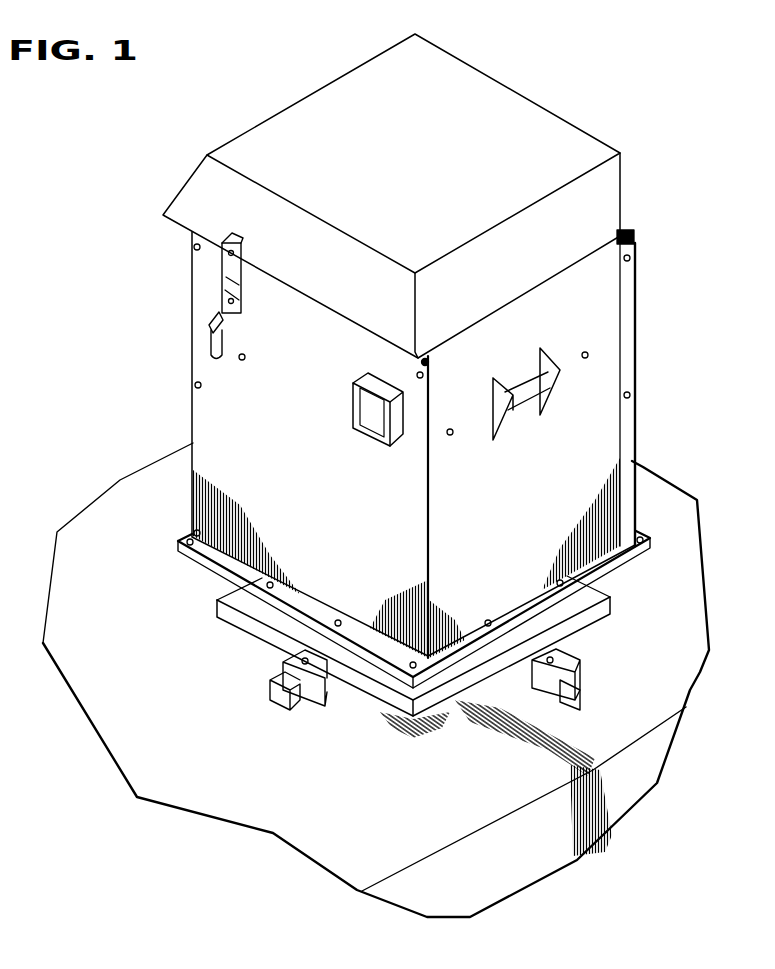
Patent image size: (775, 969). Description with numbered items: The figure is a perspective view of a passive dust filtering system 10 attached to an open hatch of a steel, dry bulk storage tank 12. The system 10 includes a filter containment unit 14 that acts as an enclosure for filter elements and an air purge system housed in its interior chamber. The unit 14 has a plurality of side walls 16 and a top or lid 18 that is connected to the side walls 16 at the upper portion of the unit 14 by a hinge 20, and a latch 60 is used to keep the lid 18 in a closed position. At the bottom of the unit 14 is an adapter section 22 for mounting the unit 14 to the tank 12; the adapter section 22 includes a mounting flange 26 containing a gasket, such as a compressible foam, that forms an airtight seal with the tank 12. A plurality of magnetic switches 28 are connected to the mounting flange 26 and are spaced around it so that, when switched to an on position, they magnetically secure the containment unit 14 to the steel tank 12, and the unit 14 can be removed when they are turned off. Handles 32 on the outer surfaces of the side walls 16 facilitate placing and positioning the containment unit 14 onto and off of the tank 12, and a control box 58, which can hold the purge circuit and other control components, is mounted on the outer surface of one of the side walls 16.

The passive dust filtering system 10 is at (142, 154).
The steel dry bulk storage tank 12 is at (320, 840).
The filter containment unit 14 is at (190, 340).
The side walls 16 is at (320, 490).
The top or lid 18 is at (540, 138).
The hinge 20 is at (636, 236).
The adapter section 22 is at (580, 598).
The mounting flange 26 is at (232, 617).
The magnetic switches 28 is at (560, 678).
The handles 32 is at (560, 381).
The control box 58 is at (367, 407).
The latch 60 is at (228, 290).